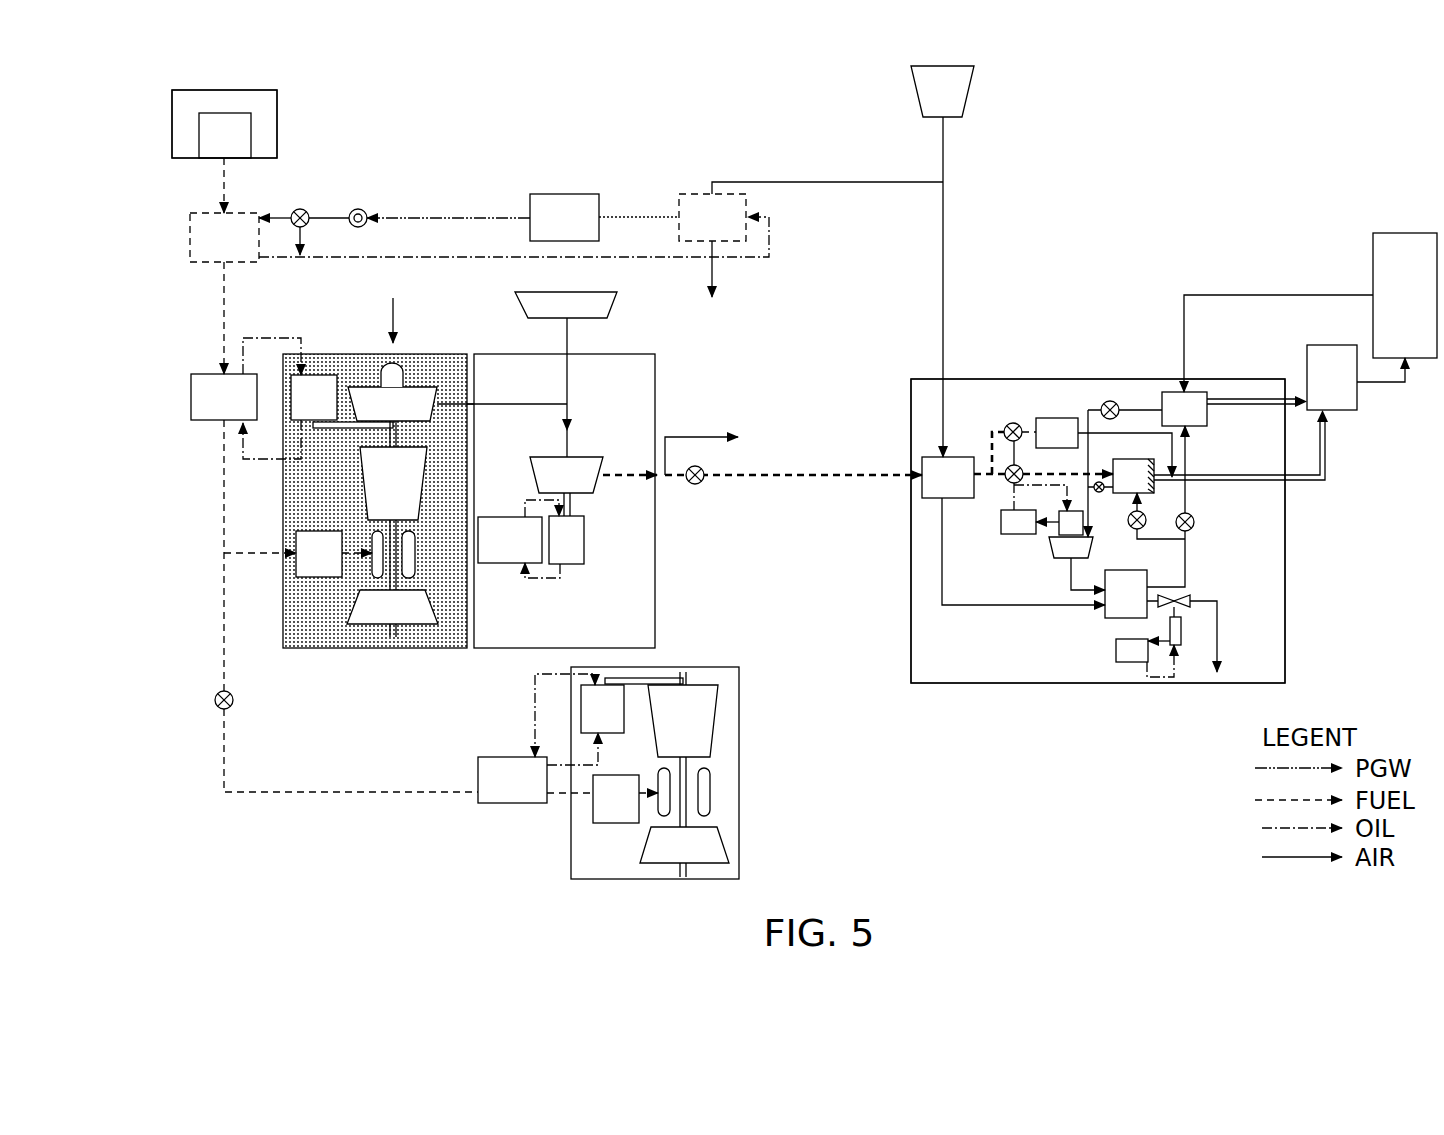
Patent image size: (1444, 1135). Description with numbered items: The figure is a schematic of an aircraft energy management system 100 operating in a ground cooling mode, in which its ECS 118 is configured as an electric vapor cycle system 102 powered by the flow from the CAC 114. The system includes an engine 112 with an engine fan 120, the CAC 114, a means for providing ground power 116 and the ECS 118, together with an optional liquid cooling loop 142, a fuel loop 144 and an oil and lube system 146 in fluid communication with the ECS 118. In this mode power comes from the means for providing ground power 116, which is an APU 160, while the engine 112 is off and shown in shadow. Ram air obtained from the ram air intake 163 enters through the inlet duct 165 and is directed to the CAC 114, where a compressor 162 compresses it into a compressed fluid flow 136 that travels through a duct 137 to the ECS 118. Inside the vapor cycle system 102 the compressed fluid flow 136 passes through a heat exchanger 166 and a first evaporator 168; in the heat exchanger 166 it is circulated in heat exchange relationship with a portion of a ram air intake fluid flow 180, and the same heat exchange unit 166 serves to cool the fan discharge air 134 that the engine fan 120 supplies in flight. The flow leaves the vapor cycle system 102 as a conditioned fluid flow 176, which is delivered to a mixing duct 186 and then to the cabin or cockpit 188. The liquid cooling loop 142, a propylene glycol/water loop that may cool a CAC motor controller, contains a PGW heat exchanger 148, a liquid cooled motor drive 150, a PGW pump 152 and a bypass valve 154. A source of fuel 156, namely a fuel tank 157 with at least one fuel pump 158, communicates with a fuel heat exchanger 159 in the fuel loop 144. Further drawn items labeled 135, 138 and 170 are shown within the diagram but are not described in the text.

The energy management system 100 is at (1060, 786).
The electric vapor cycle system 102 is at (1138, 683).
The engine 112 is at (322, 648).
The CAC 114 is at (483, 648).
The means for providing ground power 116 is at (739, 730).
The ECS 118 is at (1023, 683).
The engine fan 120 is at (422, 387).
The fan discharge fluid flow 134 is at (512, 404).
The duct wall 135 is at (486, 405).
The compressed fluid flow 136 is at (673, 480).
The duct 137 is at (770, 475).
The isolation valve 138 is at (700, 483).
The liquid cooling loop 142 is at (443, 173).
The fuel loop 144 is at (197, 510).
The oil and lube system 146 is at (513, 708).
The PGW heat exchanger 148 is at (695, 194).
The liquid cooled motor drive 150 is at (565, 194).
The PGW pump 152 is at (358, 209).
The bypass valve 154 is at (300, 209).
The source of fuel 156 is at (250, 90).
The fuel tank 157 is at (278, 117).
The fuel pump 158 is at (199, 131).
The fuel heat exchanger 159 is at (190, 237).
The APU 160 is at (739, 795).
The compressor 162 is at (592, 457).
The ram air intake 163 is at (613, 307).
The inlet duct 165 is at (568, 339).
The heat exchanger 166 is at (935, 498).
The first evaporator 168 is at (1133, 459).
The mixer 170 is at (1112, 618).
The conditioned fluid flow 176 is at (1326, 452).
The ram air intake fluid flow 180 is at (943, 204).
The mixing duct 186 is at (1307, 359).
The cabin/cockpit 188 is at (1373, 270).